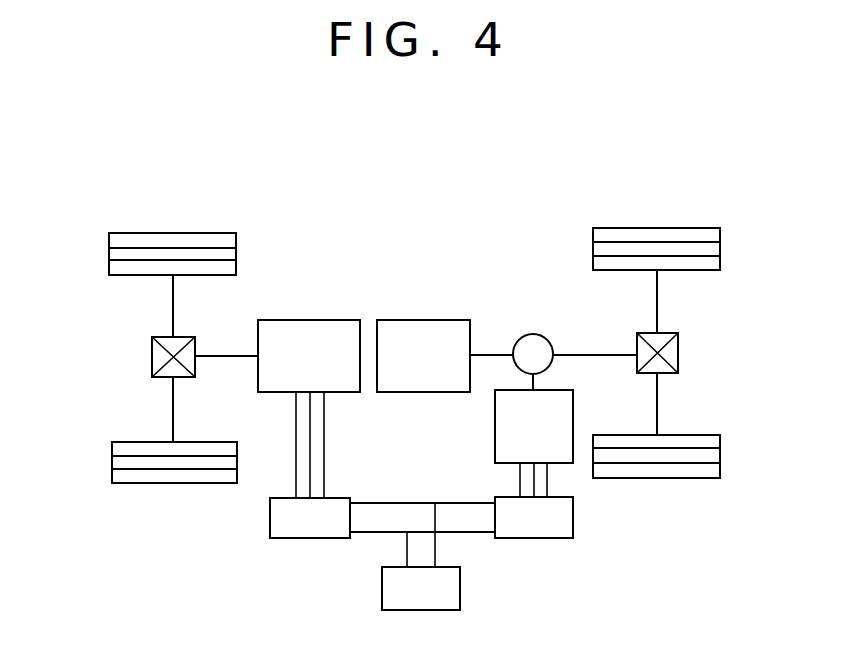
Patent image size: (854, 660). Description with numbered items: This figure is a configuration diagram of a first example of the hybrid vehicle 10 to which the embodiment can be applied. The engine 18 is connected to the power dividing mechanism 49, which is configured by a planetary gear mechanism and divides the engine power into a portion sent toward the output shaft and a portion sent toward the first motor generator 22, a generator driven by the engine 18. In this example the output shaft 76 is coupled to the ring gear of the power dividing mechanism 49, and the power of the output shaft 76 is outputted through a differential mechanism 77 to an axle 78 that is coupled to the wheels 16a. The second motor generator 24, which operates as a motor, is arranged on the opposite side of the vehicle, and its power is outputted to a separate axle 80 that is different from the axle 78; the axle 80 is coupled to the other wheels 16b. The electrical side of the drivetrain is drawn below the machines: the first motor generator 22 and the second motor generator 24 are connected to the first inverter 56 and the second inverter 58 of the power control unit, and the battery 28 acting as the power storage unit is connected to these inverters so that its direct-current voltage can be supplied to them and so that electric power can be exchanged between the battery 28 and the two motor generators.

The hybrid vehicle 10 is at (482, 252).
The wheels 16a is at (720, 245).
The other wheels 16b is at (109, 254).
The engine 18 is at (430, 320).
The first motor generator 22 is at (495, 438).
The second motor generator 24 is at (319, 320).
The battery 28 is at (462, 587).
The power dividing mechanism 49 is at (533, 334).
The first inverter 56 is at (270, 519).
The second inverter 58 is at (573, 518).
The output shaft 76 is at (594, 354).
The differential mechanism 77 is at (678, 352).
The axle 78 is at (657, 302).
The axle 80 is at (173, 306).